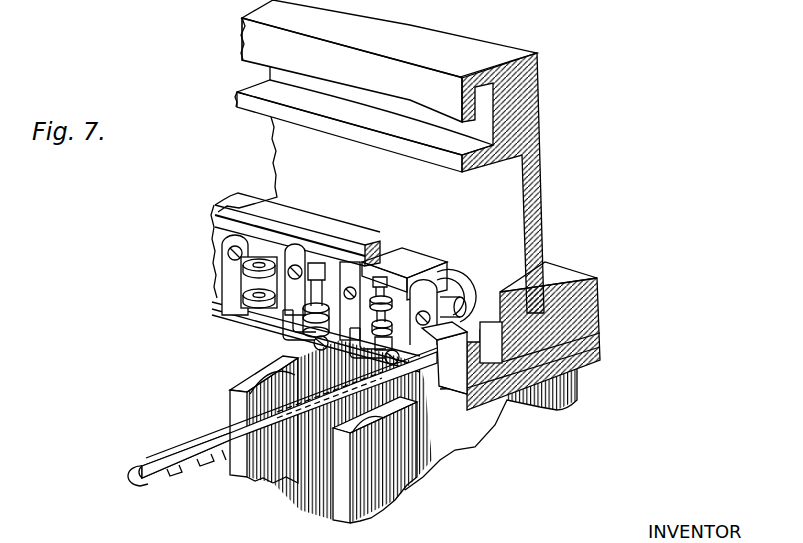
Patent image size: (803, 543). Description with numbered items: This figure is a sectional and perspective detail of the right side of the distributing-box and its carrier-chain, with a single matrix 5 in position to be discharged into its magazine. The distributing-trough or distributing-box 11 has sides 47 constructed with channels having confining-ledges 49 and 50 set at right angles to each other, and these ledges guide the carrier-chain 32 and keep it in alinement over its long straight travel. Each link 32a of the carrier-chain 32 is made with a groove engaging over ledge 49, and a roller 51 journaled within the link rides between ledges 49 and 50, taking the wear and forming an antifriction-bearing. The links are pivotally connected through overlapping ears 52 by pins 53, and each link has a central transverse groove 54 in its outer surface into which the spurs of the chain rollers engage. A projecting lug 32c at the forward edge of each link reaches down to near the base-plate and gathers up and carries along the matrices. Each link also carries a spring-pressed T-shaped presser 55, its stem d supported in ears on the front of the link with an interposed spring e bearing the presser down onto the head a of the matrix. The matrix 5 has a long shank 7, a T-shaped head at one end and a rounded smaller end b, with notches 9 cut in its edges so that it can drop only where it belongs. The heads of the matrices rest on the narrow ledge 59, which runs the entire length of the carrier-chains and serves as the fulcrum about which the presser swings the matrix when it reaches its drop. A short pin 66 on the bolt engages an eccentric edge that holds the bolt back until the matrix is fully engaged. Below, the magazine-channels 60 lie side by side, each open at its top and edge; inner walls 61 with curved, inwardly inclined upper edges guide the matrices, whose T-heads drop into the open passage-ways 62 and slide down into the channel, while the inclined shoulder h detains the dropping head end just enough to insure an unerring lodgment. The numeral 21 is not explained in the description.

The confining-ledge 49 is at (460, 97).
The confining-ledge 50 is at (462, 166).
The distributing-trough 11 is at (543, 199).
The sides of the distributing-box 47 is at (545, 229).
The carrier-chain 32 is at (213, 271).
The projecting lug 32c is at (222, 313).
The link 32a is at (450, 273).
The stem d is at (318, 263).
The spring e is at (333, 268).
The roller 51 is at (374, 260).
The central transverse groove 54 is at (427, 267).
The overlapping ears 52 is at (474, 282).
The pin 53 is at (469, 316).
The spring-pressed T-shaped presser 55 is at (283, 340).
The inclined shoulder h is at (300, 352).
The short extending pin 66 is at (437, 354).
The head a is at (440, 372).
The narrow ledge 59 is at (520, 391).
The magazine-channel 60 is at (491, 438).
The inner wall 61 is at (268, 376).
The open passage-way 62 is at (250, 392).
The bar 21 is at (230, 436).
The matrix 5 is at (181, 452).
The smaller end b is at (134, 470).
The notches or recesses 9 is at (178, 484).
The body portion or shank 7 is at (232, 475).